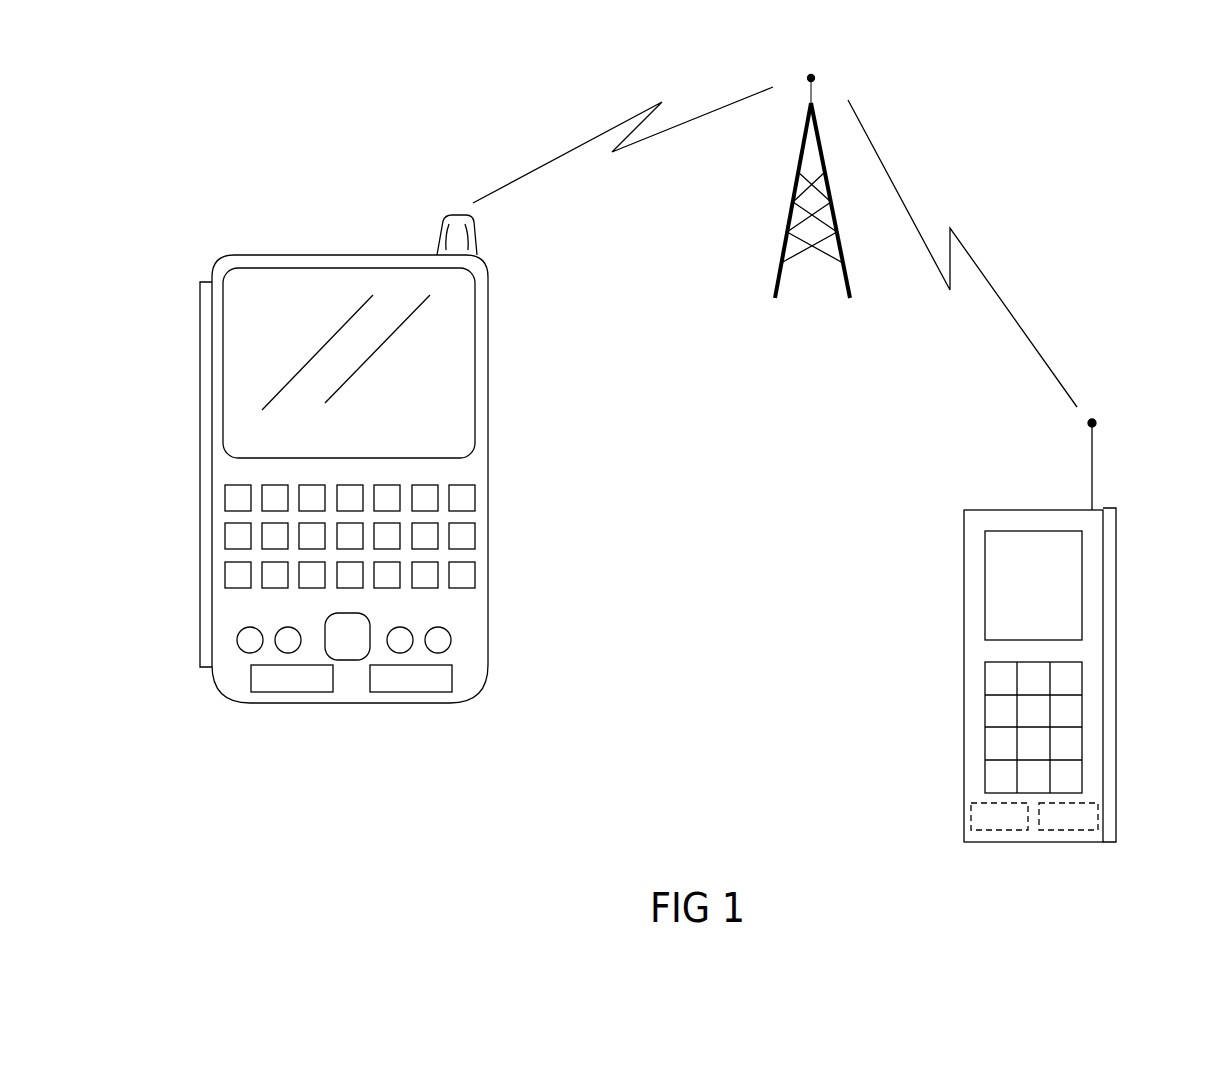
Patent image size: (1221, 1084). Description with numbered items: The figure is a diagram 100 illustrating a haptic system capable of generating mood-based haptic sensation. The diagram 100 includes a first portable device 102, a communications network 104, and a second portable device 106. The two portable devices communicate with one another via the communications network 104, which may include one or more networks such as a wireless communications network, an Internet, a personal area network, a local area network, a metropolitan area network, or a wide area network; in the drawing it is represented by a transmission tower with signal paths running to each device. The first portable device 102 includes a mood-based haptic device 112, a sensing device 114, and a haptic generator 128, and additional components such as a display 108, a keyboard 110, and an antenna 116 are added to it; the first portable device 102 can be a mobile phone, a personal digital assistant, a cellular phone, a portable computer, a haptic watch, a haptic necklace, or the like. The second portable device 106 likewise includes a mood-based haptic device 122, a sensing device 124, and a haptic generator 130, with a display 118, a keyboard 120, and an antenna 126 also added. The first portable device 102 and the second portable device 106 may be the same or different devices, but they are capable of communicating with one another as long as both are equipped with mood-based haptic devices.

The diagram 100 is at (1103, 138).
The first portable device 102 is at (312, 253).
The communications network 104 is at (773, 278).
The second portable device 106 is at (1040, 508).
The display 108 is at (450, 435).
The keyboard 110 is at (475, 572).
The mood-based haptic device 112 is at (288, 680).
The sensing device 114 is at (387, 680).
The antenna 116 is at (435, 233).
The display 118 is at (1002, 623).
The keyboard 120 is at (985, 777).
The mood-based haptic device 122 is at (1015, 818).
The sensing device 124 is at (1053, 818).
The antenna 126 is at (1093, 445).
The haptic generator 128 is at (198, 410).
The haptic generator 130 is at (1117, 662).